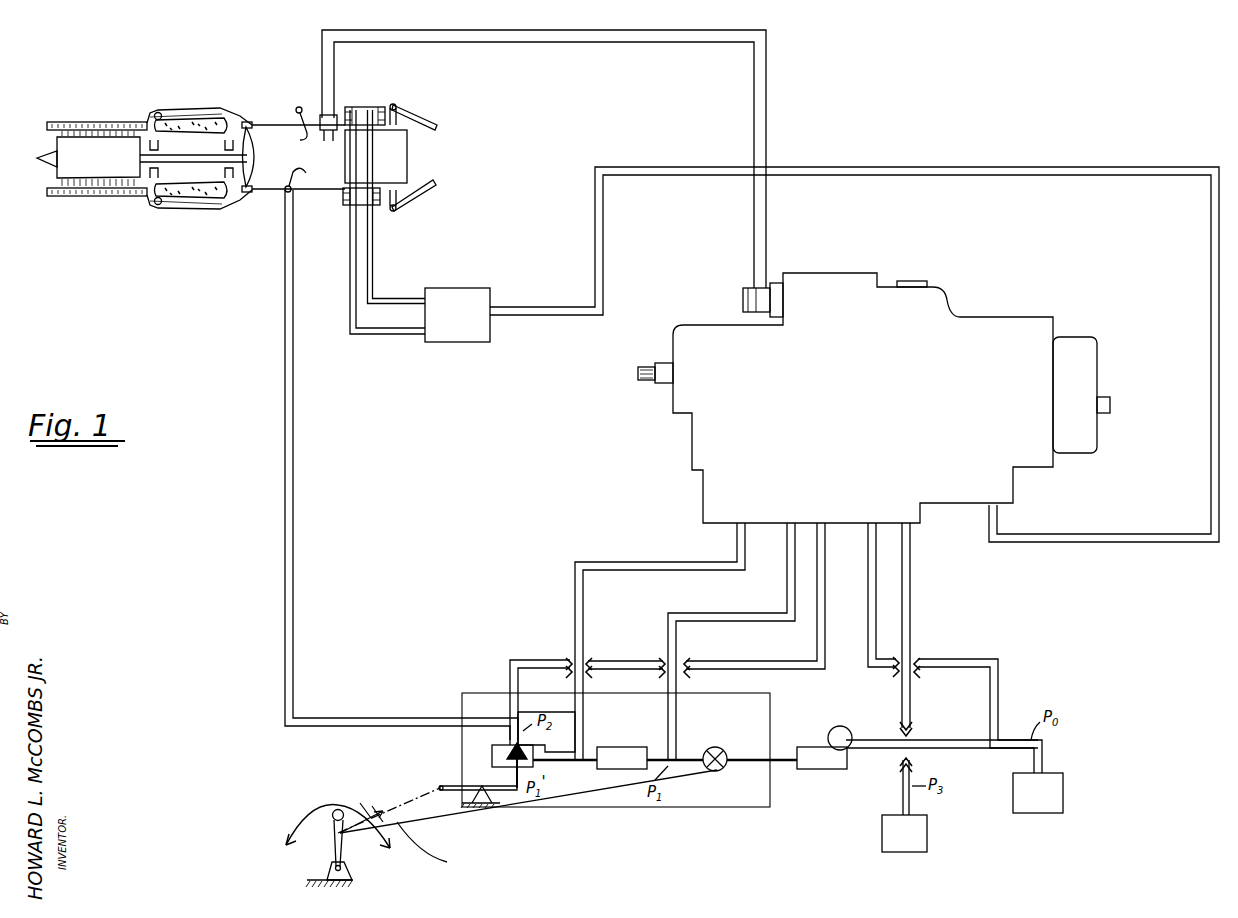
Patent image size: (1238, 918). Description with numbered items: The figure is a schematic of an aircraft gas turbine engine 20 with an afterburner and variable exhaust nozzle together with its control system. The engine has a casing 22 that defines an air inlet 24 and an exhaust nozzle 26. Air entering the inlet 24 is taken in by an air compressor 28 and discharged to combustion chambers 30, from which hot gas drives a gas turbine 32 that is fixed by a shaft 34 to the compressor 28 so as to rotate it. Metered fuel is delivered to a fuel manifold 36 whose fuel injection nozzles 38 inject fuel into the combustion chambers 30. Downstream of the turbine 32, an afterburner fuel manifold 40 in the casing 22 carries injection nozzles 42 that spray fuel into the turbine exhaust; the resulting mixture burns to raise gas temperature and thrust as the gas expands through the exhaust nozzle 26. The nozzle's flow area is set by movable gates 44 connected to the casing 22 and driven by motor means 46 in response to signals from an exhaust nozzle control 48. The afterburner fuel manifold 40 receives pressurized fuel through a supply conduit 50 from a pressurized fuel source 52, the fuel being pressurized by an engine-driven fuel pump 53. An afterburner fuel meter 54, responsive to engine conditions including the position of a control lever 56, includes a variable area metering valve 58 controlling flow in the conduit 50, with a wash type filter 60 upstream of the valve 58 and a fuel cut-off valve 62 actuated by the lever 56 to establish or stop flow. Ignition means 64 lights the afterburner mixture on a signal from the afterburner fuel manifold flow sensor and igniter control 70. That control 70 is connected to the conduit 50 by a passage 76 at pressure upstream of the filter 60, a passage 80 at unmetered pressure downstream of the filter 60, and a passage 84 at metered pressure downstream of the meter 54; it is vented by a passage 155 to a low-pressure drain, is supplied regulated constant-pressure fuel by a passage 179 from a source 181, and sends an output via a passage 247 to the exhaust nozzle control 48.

The gas turbine engine 20 is at (229, 107).
The casing 22 is at (72, 124).
The air inlet 24 is at (55, 180).
The exhaust nozzle 26 is at (405, 185).
The air compressor 28 is at (108, 169).
The combustion chambers 30 is at (190, 200).
The gas turbine 32 is at (254, 136).
The shaft 34 is at (176, 156).
The fuel manifold 36 is at (158, 112).
The fuel injection nozzles 38 is at (152, 204).
The afterburner fuel manifold 40 is at (302, 112).
The injection nozzles 42 is at (288, 192).
The movable gates 44 is at (432, 190).
The motor means 46 is at (378, 108).
The exhaust nozzle control 48 is at (450, 340).
The supply conduit 50 is at (325, 718).
The pressurized fuel source 52 is at (1041, 800).
The fuel pump 53 is at (815, 769).
The afterburner fuel meter 54 is at (746, 808).
The control lever 56 is at (338, 810).
The variable area metering valve 58 is at (490, 750).
The wash type filter 60 is at (620, 770).
The fuel cut-off valve 62 is at (712, 771).
The ignition means 64 is at (335, 117).
The afterburner fuel manifold flow sensor and igniter control 70 is at (976, 312).
The passage 76 is at (786, 590).
The passage 80 is at (601, 562).
The passage 84 is at (528, 660).
The passage 155 is at (870, 563).
The passage 179 is at (912, 588).
The source of regulated pressure fuel 181 is at (890, 850).
The passage 247 is at (1113, 544).